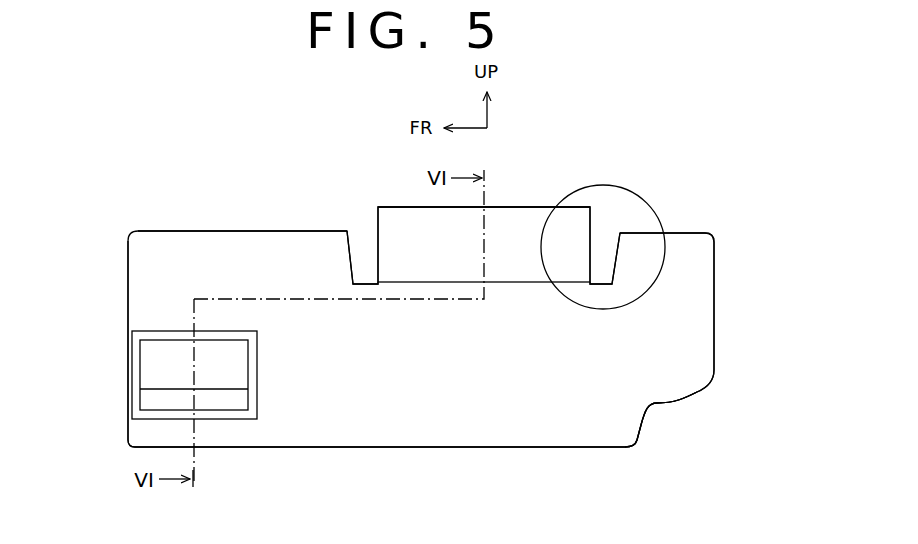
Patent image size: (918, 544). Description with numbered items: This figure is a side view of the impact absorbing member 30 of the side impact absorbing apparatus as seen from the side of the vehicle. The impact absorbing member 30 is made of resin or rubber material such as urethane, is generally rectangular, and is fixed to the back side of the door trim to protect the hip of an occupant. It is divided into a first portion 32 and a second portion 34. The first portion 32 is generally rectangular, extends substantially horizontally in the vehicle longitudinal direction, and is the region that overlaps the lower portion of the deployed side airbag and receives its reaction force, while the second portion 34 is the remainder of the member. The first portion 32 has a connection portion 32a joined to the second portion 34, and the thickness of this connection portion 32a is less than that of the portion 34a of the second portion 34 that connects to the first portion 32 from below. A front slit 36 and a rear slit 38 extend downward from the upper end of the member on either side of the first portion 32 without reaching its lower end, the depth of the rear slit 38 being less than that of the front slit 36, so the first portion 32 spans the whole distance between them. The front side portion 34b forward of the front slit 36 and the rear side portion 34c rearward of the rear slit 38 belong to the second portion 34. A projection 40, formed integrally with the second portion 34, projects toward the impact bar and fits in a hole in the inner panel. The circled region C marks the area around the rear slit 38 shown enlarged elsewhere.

The impact absorbing member 30 is at (208, 228).
The first portion 32 is at (525, 233).
The connection portion 32a is at (438, 277).
The second portion 34 is at (440, 427).
The portion of the second portion 34a is at (510, 298).
The front side portion 34b is at (292, 245).
The rear side portion 34c is at (685, 248).
The front slit 36 is at (367, 275).
The rear slit 38 is at (601, 277).
The projection 40 is at (165, 347).
The enlarged region circle C is at (658, 205).